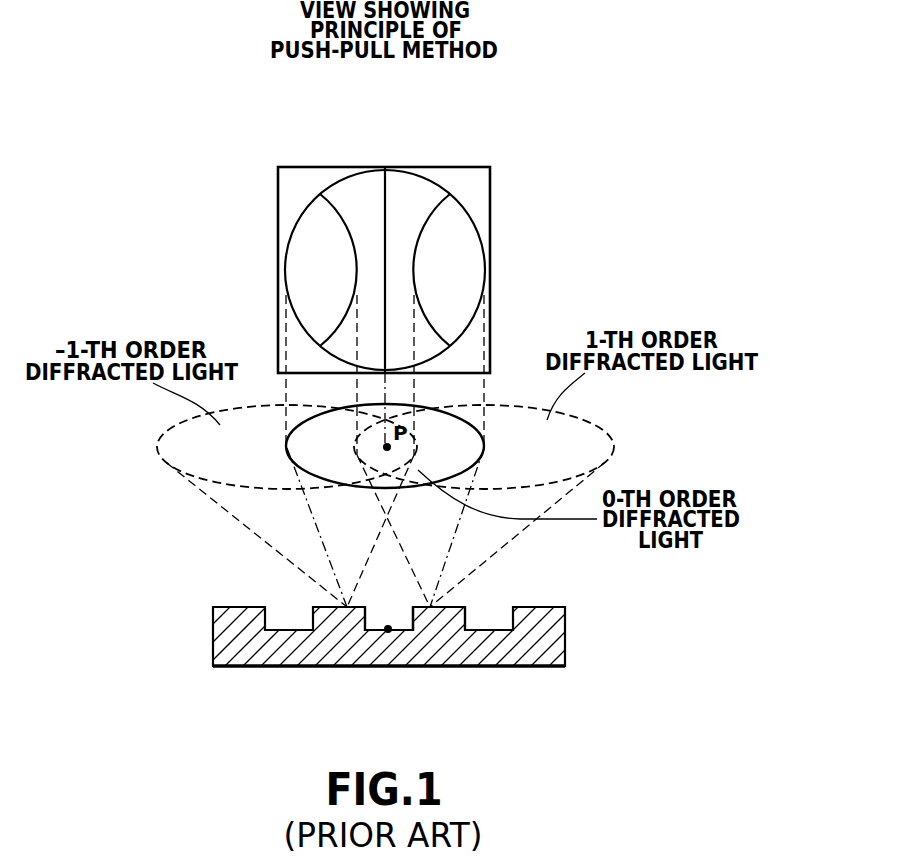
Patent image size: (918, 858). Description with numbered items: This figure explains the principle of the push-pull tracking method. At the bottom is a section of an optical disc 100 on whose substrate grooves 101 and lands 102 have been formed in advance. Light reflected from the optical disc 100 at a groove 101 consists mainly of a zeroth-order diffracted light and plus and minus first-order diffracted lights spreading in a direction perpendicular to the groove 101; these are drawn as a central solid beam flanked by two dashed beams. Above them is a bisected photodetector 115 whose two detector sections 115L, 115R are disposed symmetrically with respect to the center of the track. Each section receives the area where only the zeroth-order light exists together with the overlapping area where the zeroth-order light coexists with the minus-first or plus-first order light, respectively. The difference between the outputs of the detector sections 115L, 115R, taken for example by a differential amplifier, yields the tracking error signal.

The bisected photodetector 115 is at (379, 155).
The detector section 115L is at (300, 182).
The detector section 115R is at (470, 182).
The optical disc 100 is at (243, 653).
The groove 101 is at (373, 633).
The land 102 is at (455, 618).